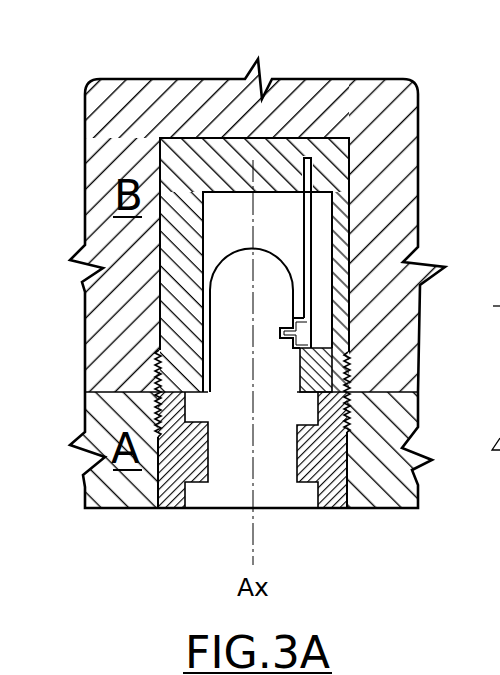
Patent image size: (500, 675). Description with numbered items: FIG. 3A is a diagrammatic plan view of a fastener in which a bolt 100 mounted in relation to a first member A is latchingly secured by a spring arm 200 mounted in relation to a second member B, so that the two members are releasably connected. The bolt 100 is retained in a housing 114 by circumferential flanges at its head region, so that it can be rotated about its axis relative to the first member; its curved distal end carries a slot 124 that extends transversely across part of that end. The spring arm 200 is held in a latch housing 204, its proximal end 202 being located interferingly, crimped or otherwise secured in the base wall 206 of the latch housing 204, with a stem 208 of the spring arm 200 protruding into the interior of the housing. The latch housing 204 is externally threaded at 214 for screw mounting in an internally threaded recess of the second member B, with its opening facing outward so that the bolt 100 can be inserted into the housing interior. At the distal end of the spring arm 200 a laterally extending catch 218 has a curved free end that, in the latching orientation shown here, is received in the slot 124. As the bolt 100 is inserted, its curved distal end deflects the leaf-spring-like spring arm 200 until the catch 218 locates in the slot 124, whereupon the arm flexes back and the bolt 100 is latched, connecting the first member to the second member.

The bolt 100 is at (272, 425).
The housing 114 is at (183, 473).
The slot 124 is at (280, 332).
The spring arm 200 is at (320, 310).
The proximal end 202 is at (312, 183).
The latch housing 204 is at (158, 132).
The base wall 206 is at (232, 155).
The stem 208 is at (346, 333).
The external thread 214 is at (146, 362).
The catch 218 is at (412, 430).